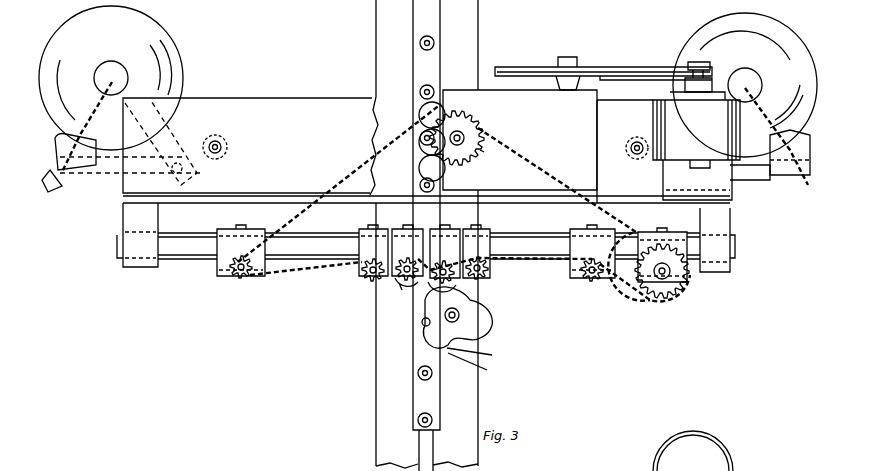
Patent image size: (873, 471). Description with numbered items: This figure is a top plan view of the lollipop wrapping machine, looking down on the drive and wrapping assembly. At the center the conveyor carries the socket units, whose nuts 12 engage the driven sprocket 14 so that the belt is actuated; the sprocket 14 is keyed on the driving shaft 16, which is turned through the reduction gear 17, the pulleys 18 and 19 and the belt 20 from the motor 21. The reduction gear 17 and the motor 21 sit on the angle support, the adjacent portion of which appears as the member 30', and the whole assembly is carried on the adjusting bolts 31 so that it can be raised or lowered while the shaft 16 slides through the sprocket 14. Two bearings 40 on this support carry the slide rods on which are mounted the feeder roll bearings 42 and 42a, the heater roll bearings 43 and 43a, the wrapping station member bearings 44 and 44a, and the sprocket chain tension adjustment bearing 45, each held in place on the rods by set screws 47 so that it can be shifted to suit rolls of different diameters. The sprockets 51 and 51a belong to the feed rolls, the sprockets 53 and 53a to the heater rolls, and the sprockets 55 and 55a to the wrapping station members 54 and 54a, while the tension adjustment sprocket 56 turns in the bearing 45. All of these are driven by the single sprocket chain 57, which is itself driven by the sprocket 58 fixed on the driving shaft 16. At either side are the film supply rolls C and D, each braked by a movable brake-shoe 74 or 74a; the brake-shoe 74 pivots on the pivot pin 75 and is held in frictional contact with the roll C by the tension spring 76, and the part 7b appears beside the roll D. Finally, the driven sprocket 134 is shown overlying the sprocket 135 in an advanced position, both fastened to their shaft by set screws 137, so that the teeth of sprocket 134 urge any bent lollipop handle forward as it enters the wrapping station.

The supply roll C is at (152, 36).
The supply roll D is at (778, 40).
The nut 12 is at (436, 43).
The driven sprocket 14 is at (424, 115).
The driving shaft 16 is at (462, 135).
The reduction gear 17 is at (560, 128).
The pulley 18 is at (597, 67).
The pulley 19 is at (703, 65).
The belt 20 is at (657, 72).
The motor 21 is at (708, 140).
The carriage plate 30' is at (247, 132).
The adjusting bolt 31 is at (226, 147).
The bearing 40 is at (125, 220).
The feeder roll bearing 42 is at (222, 276).
The feeder roll bearing 42a is at (608, 278).
The heater roll bearing 43 is at (362, 276).
The heater roll bearing 43a is at (492, 276).
The wrapping station member bearing 44 is at (392, 276).
The wrapping station member bearing 44a is at (436, 229).
The sprocket chain tension adjustment bearing 45 is at (683, 240).
The set screw 47 is at (242, 228).
The sprocket 51 is at (241, 279).
The sprocket 51a is at (590, 281).
The sprocket 53 is at (371, 282).
The sprocket 53a is at (480, 280).
The wrapping station member 54 is at (404, 288).
The wrapping station member 54a is at (462, 286).
The sprocket 55 is at (408, 257).
The sprocket 55a is at (445, 260).
The sprocket chain tension adjustment sprocket 56 is at (672, 286).
The sprocket chain 57 is at (322, 192).
The sprocket 58 is at (482, 151).
The brake-shoe 74 is at (97, 165).
The brake-shoe 74a is at (780, 172).
The pivot pin 75 is at (186, 168).
The tension spring 76 is at (72, 128).
The plate 7b is at (784, 136).
The driven sprocket 134 is at (482, 353).
The driven sprocket 135 is at (482, 365).
The set screw 137 is at (459, 322).